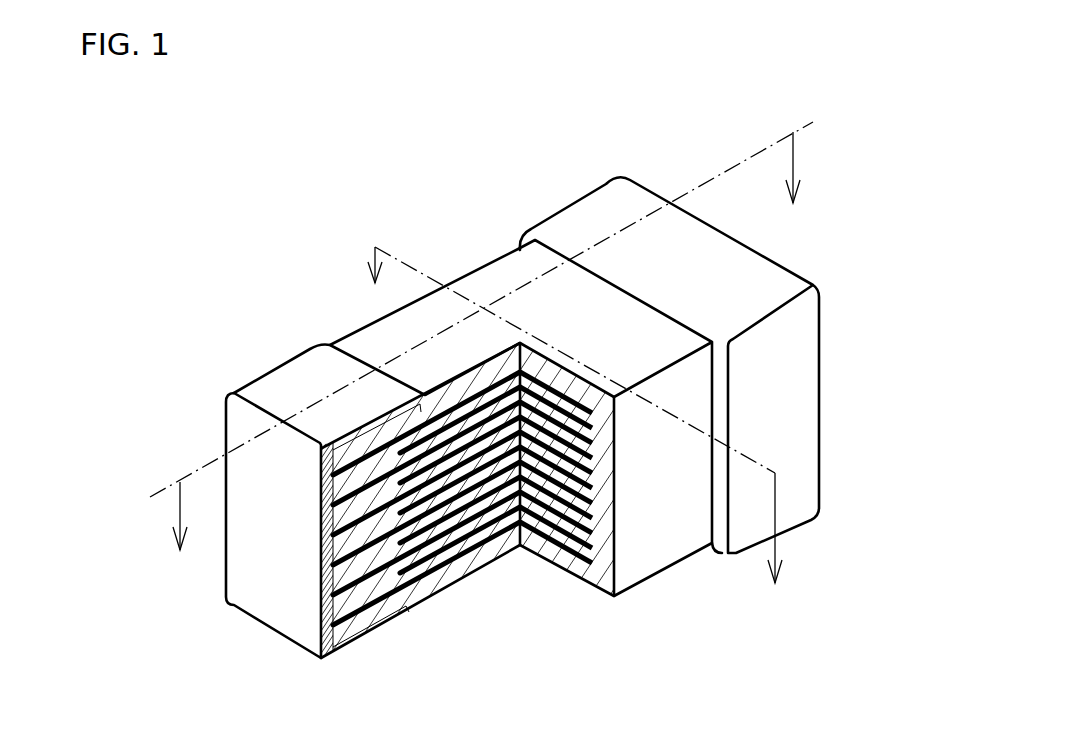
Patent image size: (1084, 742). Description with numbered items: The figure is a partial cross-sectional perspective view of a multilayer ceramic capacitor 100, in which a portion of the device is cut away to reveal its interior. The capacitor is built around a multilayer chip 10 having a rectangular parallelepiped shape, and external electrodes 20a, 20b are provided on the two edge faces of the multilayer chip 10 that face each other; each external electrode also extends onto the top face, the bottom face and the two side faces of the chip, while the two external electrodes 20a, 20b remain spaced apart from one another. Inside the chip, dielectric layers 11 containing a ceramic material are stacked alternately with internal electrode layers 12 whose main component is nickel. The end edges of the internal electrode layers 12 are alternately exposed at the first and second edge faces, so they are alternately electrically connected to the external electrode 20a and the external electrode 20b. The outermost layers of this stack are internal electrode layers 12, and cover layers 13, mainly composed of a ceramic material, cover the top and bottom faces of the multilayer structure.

The multilayer ceramic capacitor 100 is at (917, 107).
The multilayer chip 10 is at (362, 336).
The dielectric layer 11 is at (468, 555).
The internal electrode layer 12 is at (430, 590).
The cover layer 13 is at (487, 283).
The external electrode 20a is at (252, 378).
The external electrode 20b is at (575, 210).